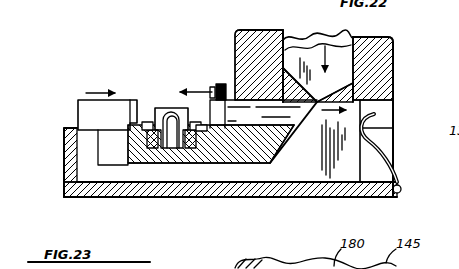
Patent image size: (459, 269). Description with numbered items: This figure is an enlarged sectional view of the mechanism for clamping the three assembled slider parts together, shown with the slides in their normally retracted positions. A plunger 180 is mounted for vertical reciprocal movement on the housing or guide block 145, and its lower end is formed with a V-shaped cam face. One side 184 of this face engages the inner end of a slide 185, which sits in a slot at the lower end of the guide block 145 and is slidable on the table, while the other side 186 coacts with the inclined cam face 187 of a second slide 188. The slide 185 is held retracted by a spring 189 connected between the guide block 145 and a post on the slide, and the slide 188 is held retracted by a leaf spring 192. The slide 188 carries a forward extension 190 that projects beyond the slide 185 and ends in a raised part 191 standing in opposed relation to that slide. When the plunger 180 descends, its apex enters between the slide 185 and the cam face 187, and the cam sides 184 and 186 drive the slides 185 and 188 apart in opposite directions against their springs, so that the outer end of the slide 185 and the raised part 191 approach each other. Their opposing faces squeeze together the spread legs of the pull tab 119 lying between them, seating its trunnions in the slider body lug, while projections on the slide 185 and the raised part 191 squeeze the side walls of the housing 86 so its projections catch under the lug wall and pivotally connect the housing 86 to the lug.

The housing 86 is at (172, 106).
The pull tab 119 is at (148, 122).
The housing or guide block 145 is at (240, 30).
The plunger 180 is at (318, 38).
The side of V-shaped cam face 184 is at (305, 101).
The slide 185 is at (252, 128).
The side of V-shaped cam face 186 is at (357, 77).
The inclined cam face 187 is at (283, 143).
The slide 188 is at (262, 183).
The spring 189 is at (223, 84).
The forward extension 190 is at (112, 176).
The raised part 191 is at (83, 103).
The leaf spring 192 is at (390, 138).